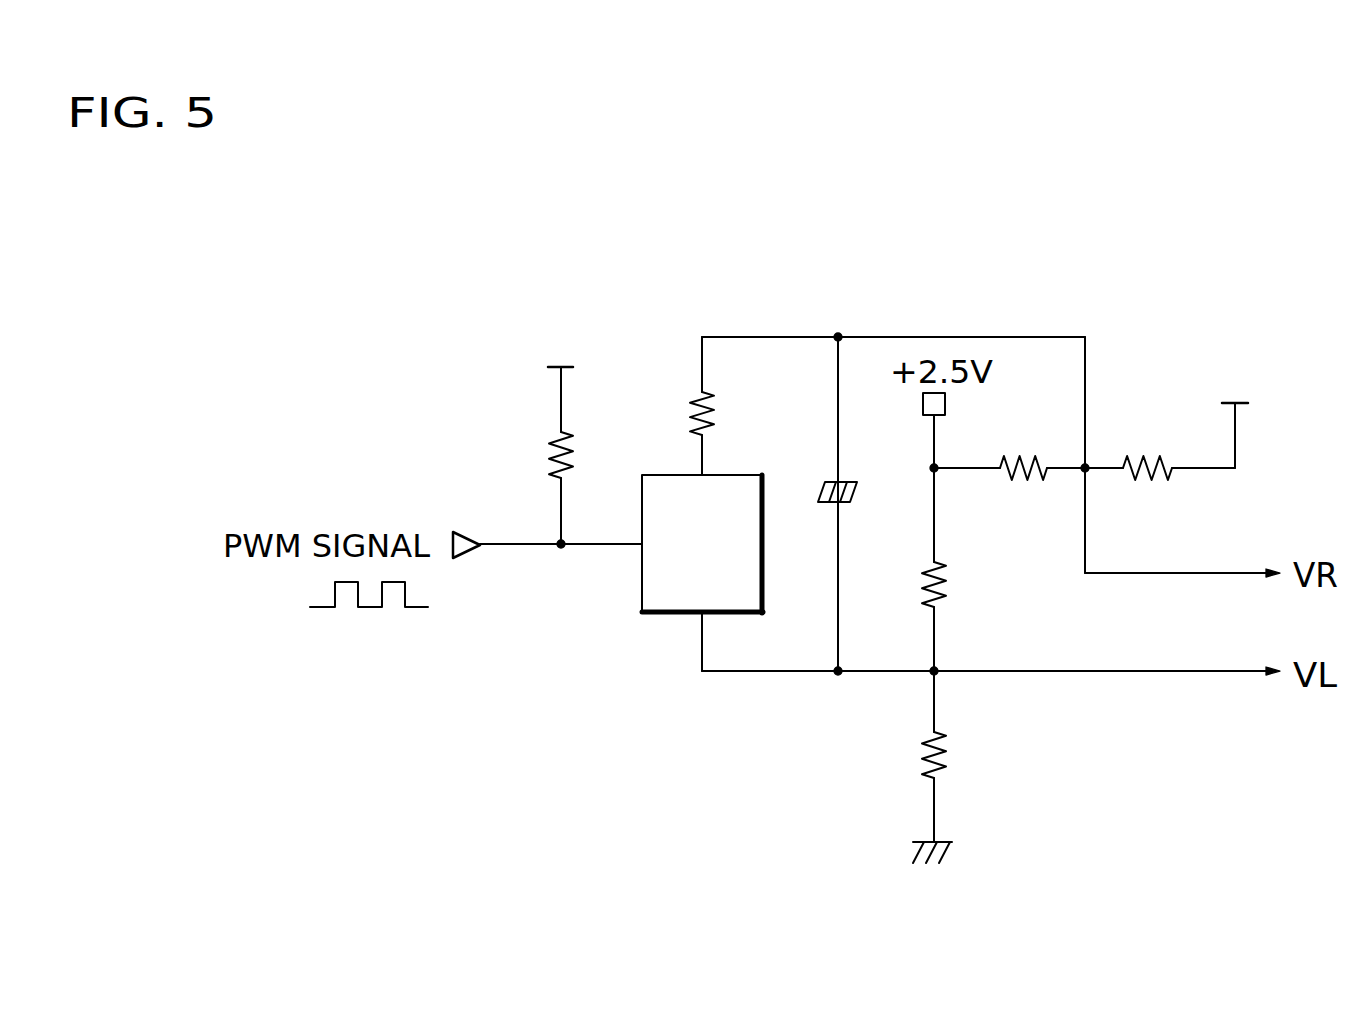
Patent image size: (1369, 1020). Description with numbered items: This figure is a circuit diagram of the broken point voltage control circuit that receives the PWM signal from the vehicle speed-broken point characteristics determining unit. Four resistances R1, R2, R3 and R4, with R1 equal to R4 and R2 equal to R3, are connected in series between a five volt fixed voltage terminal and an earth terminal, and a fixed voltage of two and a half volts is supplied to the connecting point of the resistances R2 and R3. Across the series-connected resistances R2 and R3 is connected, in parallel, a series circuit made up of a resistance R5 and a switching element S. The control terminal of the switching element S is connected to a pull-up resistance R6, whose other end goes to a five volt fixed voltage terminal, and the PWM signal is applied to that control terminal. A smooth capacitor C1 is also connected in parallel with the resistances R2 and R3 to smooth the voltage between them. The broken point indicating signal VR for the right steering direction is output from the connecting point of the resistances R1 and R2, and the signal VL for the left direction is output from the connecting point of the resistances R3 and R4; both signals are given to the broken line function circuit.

The resistance R1 is at (1147, 454).
The resistance R2 is at (1024, 452).
The resistance R3 is at (953, 580).
The resistance R4 is at (919, 751).
The resistance R5 is at (680, 420).
The pull-up resistance R6 is at (548, 450).
The smooth capacitor C1 is at (862, 489).
The switching element S is at (650, 615).